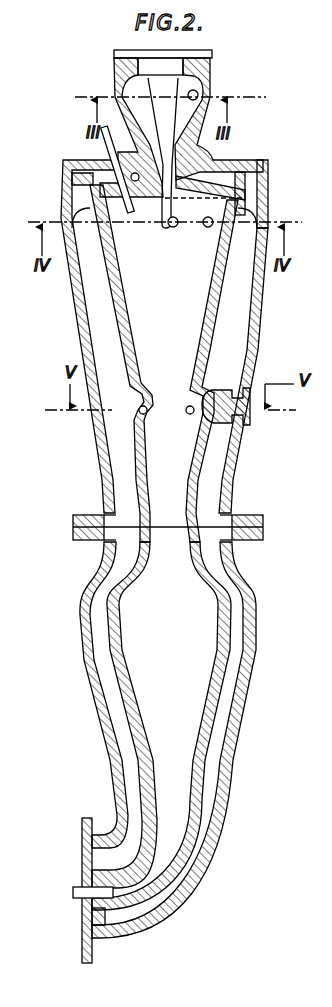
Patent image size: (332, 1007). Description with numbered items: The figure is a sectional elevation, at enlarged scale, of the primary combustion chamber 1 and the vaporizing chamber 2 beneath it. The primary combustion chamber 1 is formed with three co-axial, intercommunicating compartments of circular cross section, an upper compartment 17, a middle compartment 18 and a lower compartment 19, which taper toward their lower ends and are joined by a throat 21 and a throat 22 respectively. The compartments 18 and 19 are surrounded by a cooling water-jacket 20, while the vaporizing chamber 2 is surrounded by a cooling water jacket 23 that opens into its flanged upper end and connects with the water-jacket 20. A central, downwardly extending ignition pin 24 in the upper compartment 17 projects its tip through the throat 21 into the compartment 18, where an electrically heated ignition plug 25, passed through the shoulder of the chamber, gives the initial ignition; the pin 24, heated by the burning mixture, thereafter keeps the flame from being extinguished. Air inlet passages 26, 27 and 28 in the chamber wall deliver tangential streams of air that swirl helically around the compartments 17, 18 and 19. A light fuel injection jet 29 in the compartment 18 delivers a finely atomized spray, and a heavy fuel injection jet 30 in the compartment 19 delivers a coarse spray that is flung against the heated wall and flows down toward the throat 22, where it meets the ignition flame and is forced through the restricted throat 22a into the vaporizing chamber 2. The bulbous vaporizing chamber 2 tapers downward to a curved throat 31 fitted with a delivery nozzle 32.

The primary combustion chamber 1 is at (263, 292).
The vaporizing chamber 2 is at (240, 722).
The upper compartment 17 is at (169, 139).
The compartment 18 is at (192, 328).
The lower compartment 19 is at (177, 447).
The cooling water-jacket 20 is at (223, 350).
The throat 21 is at (224, 163).
The throat 22 is at (158, 400).
The restricted throat 22a is at (163, 523).
The cooling water jacket 23 is at (207, 785).
The ignition pin 24 is at (160, 228).
The ignition plug 25 is at (104, 141).
The air inlet passage 26 is at (199, 92).
The air inlet passage 27 is at (178, 228).
The air inlet passage 28 is at (215, 397).
The light fuel injection jet 29 is at (213, 221).
The heavy fuel injection jet 30 is at (130, 415).
The curved throat 31 is at (121, 893).
The delivery nozzle 32 is at (74, 897).